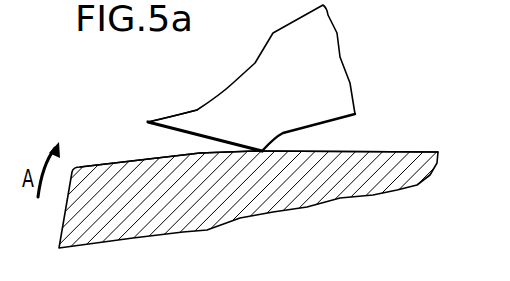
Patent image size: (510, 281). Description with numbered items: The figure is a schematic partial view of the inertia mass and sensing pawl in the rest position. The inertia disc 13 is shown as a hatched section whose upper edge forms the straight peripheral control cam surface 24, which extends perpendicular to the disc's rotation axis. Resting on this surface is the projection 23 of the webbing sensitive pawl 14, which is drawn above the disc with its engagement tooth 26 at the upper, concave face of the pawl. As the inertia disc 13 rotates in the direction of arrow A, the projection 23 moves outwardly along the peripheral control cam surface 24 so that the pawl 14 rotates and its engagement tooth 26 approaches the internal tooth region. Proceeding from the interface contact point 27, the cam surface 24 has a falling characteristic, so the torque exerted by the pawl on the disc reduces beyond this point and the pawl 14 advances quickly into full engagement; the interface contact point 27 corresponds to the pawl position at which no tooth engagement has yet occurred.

The inertia disc 13 is at (367, 182).
The webbing sensitive pawl 14 is at (342, 90).
The projection 23 is at (263, 133).
The peripheral control cam surface 24 is at (419, 151).
The engagement tooth 26 is at (197, 112).
The interface contact point 27 is at (213, 151).